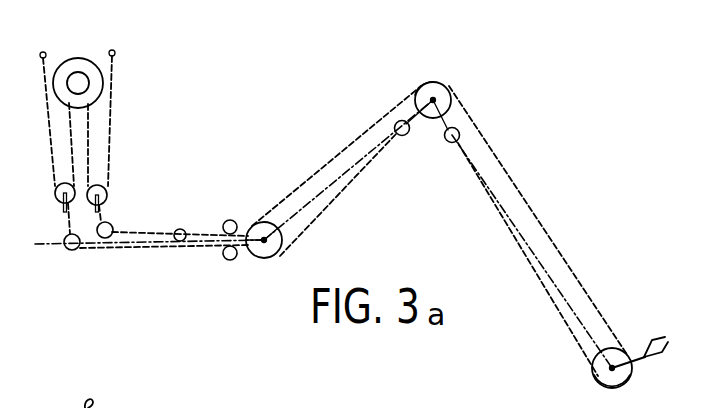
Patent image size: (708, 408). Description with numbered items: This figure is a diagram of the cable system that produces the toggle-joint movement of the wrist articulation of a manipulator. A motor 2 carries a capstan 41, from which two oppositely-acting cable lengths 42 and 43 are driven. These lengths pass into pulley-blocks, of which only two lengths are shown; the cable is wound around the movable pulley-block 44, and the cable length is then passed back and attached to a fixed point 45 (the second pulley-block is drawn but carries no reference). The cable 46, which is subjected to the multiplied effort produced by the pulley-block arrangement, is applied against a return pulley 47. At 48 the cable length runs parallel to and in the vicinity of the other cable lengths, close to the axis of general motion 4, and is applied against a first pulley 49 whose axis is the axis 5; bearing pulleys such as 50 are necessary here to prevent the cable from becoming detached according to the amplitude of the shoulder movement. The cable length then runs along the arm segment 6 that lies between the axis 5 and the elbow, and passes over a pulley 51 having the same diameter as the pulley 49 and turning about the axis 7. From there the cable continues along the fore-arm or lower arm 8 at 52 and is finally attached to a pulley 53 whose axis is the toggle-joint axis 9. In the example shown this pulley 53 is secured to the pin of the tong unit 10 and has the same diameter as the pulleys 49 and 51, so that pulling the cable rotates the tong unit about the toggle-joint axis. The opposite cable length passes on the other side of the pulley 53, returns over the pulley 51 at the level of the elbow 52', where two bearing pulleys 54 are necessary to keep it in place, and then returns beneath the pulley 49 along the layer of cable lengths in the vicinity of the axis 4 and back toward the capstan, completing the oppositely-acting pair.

The motor 2 is at (79, 62).
The axis of general motion 4 is at (52, 248).
The axis of first pulley 5 is at (263, 258).
The second arm 6 is at (313, 208).
The axis of pulley 51 7 is at (440, 84).
The fore-arm or lower arm 8 is at (565, 266).
The toggle-joint axis 9 is at (592, 368).
The tong unit 10 is at (635, 355).
The capstan 41 is at (86, 81).
The cable length 42 is at (111, 136).
The cable length 43 is at (72, 161).
The movable pulley-block 44 is at (110, 190).
The fixed point 45 is at (114, 53).
The cable 46 is at (100, 221).
The return pulley 47 is at (108, 244).
The cable length 48 is at (178, 244).
The first pulley 49 is at (268, 226).
The bearing pulley 50 is at (231, 220).
The pulley 51 is at (416, 97).
The cable along lower arm 52 is at (538, 221).
The elbow 52' is at (525, 259).
The pulley 53 is at (604, 383).
The bearing pulleys 54 is at (447, 137).